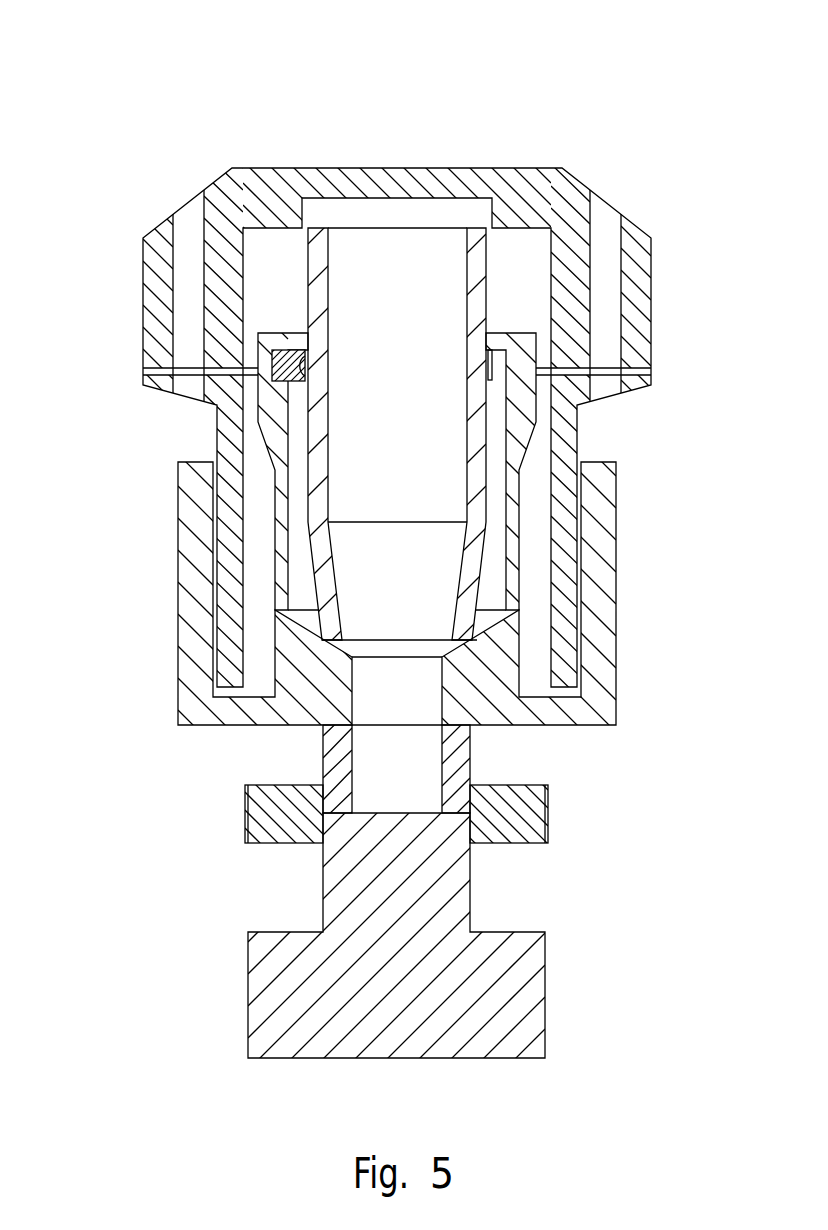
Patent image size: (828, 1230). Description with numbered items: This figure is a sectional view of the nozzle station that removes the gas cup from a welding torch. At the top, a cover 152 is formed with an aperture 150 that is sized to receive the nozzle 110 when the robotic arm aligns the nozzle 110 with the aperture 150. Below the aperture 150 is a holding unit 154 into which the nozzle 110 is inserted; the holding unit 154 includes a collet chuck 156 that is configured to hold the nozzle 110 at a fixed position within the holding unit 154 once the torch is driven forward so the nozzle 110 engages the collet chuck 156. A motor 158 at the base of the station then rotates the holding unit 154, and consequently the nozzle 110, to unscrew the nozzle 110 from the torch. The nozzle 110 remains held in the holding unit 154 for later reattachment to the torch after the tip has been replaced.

The aperture 150 is at (372, 615).
The cover 152 is at (260, 177).
The nozzle 110 is at (320, 260).
The holding unit 154 is at (520, 432).
The collet chuck 156 is at (273, 367).
The motor 158 is at (532, 1015).